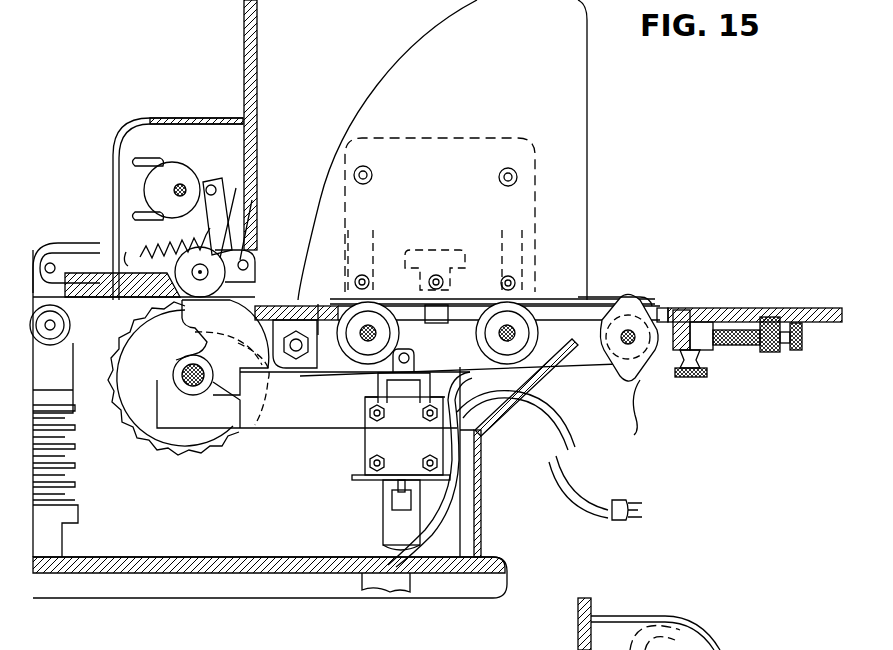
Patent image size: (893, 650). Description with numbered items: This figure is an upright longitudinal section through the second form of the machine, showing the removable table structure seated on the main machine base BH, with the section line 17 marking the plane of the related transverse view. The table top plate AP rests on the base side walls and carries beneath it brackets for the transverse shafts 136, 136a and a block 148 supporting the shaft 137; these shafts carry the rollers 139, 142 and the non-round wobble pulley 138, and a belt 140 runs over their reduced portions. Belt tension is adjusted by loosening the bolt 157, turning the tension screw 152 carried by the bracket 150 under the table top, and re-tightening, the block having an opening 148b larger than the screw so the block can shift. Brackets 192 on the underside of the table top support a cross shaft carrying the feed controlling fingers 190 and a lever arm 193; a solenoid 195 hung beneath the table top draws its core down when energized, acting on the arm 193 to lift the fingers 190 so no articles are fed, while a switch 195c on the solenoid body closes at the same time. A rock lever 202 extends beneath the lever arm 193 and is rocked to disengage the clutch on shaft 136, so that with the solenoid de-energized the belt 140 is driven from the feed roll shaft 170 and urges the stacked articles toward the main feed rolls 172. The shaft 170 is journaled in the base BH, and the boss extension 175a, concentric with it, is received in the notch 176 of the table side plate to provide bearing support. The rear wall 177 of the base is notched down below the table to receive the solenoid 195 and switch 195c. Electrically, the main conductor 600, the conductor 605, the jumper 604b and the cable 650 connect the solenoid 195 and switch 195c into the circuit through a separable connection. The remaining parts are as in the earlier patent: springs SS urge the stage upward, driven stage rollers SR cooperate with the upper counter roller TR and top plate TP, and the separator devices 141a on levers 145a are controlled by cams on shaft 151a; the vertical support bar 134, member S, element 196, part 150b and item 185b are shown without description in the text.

The section line 17- 17 is at (376, 150).
The vertical support bar 134 is at (258, 60).
The bracket 150 is at (172, 170).
The shaft 151a is at (182, 188).
The separator device 141a is at (160, 236).
The lever 145a is at (232, 245).
The upper counter roller TR is at (56, 250).
The top plate TP is at (112, 295).
The driven stage roller SR is at (70, 342).
The spring S is at (68, 386).
The spring SS is at (75, 470).
The main machine base BH is at (112, 545).
The conductor 605 is at (362, 580).
The main feed roll 172 is at (132, 405).
The feed roll shaft 170 is at (205, 388).
The notch 176 is at (172, 350).
The extension 175a is at (195, 345).
The feed controlling finger 190 is at (240, 325).
The lever arm 193 is at (330, 382).
The nut 196 is at (296, 352).
The rock lever 202 is at (370, 395).
The roller 139 is at (402, 336).
The roller 142 is at (538, 340).
The transverse shaft 136 is at (370, 330).
The transverse shaft 136a is at (508, 330).
The belt 140 is at (604, 300).
The shaft 137 is at (636, 330).
The wobble pulley 138 is at (646, 412).
The table top plate AP is at (805, 308).
The opening 148b is at (710, 325).
The bolt 157 is at (678, 375).
The block 148 is at (722, 348).
The nut 150b is at (770, 353).
The tension screw 152 is at (804, 338).
The rear wall 177 is at (484, 494).
The switch actuator 185b is at (400, 400).
The jumper 604b is at (445, 440).
The solenoid 195 is at (365, 453).
The switch 195c is at (392, 528).
The main conductor 600 is at (468, 400).
The cable 650 is at (548, 423).
The bracket 192 is at (300, 318).